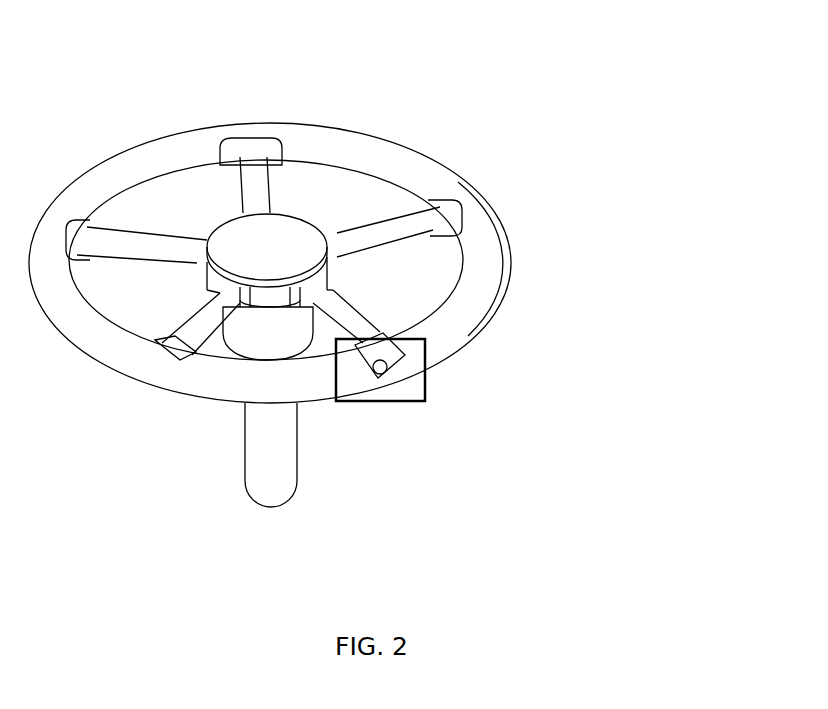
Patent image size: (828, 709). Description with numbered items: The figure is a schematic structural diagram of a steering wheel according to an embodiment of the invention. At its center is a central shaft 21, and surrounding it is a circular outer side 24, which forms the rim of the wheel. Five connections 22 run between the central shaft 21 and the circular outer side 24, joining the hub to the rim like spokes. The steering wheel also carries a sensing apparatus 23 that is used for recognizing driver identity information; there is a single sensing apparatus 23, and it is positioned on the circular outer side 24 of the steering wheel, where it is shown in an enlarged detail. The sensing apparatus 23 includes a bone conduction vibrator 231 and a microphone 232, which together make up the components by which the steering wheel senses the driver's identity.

The central shaft 21 is at (264, 232).
The connections 22 is at (355, 233).
The sensing apparatus 23 is at (526, 450).
The bone conduction vibrator 231 is at (383, 374).
The microphone 232 is at (391, 368).
The circular outer side 24 is at (478, 235).